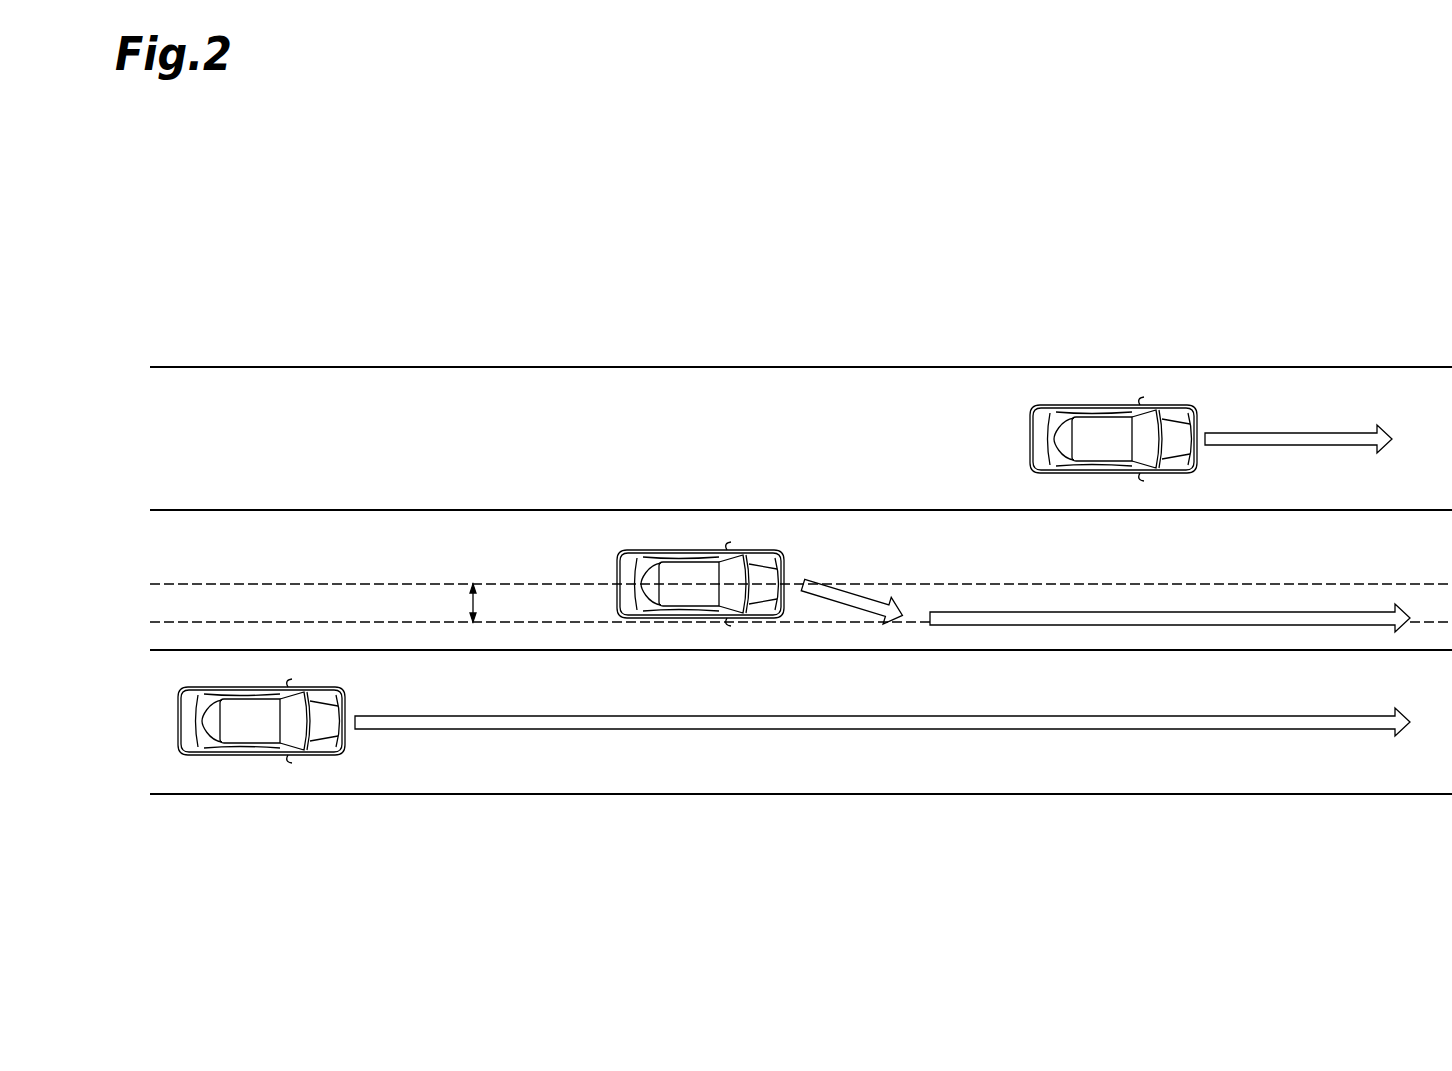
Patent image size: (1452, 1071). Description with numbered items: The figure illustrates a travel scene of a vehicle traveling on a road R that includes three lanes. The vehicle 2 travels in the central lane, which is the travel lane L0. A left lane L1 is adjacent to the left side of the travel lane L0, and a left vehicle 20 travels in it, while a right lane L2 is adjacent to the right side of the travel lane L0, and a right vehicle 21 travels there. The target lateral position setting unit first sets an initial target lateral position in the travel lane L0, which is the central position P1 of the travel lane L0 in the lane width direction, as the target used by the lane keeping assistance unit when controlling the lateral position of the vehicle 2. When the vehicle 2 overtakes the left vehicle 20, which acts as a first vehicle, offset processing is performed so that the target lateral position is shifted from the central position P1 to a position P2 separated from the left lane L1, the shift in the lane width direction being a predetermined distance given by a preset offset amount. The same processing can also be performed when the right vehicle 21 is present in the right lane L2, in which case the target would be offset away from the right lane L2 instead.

The vehicle 2 is at (649, 551).
The left vehicle 20 is at (1067, 405).
The right vehicle 21 is at (245, 758).
The road R is at (277, 218).
The travel lane L0 is at (192, 538).
The left lane L1 is at (192, 392).
The right lane L2 is at (182, 775).
The central position P1 is at (1422, 583).
The position P2 is at (1430, 626).